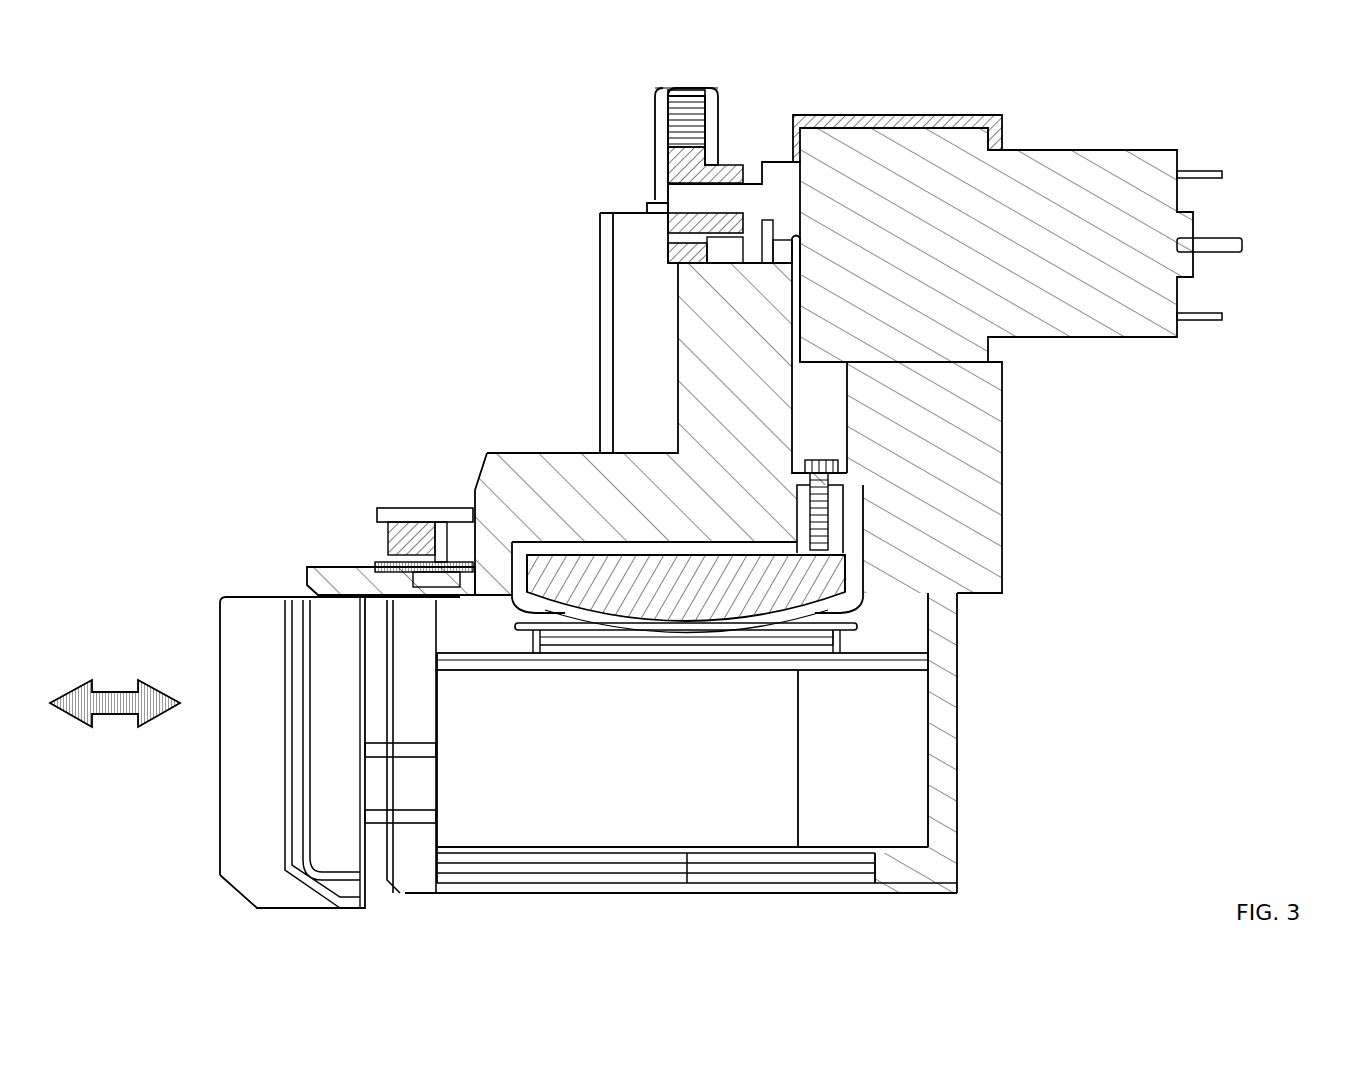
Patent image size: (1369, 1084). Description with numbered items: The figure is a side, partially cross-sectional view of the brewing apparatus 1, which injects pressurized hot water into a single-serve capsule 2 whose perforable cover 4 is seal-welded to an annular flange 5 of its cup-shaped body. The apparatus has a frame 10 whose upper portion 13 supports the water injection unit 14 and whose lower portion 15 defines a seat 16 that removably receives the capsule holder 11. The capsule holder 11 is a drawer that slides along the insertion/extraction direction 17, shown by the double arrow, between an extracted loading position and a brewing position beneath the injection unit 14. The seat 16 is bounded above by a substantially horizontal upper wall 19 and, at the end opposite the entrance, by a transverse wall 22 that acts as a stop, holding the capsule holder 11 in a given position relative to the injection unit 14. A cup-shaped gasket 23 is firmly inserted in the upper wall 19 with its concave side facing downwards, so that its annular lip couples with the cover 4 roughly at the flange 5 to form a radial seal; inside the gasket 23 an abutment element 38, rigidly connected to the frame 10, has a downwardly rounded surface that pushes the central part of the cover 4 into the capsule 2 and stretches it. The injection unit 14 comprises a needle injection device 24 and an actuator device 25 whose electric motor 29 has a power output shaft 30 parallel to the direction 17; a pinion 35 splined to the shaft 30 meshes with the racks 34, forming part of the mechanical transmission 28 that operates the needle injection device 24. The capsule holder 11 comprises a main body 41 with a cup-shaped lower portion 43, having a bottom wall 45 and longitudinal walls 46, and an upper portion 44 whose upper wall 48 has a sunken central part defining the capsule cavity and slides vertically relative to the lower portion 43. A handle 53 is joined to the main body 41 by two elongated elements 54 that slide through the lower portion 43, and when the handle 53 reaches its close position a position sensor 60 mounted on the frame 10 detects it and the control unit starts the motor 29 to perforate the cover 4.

The brewing apparatus 1 is at (325, 269).
The capsule 2 is at (834, 651).
The cover 4 is at (835, 628).
The annular flange 5 is at (860, 632).
The frame 10 is at (1012, 505).
The capsule holder 11 is at (216, 777).
The upper portion 13 is at (992, 427).
The water injection unit 14 is at (753, 104).
The lower portion 15 is at (964, 828).
The seat 16 is at (916, 804).
The insertion/extraction direction 17 is at (108, 688).
The upper wall 19 is at (358, 573).
The transverse wall 22 is at (946, 785).
The cup-shaped gasket 23 is at (848, 574).
The needle injection device 24 is at (647, 184).
The actuator device 25 is at (1037, 107).
The transmission 28 is at (733, 146).
The electric motor 29 is at (1143, 178).
The power output shaft 30 is at (692, 208).
The racks 34 is at (690, 90).
The pinion 35 is at (665, 150).
The abutment element 38 is at (585, 575).
The main body 41 is at (600, 886).
The lower portion 43 is at (521, 840).
The upper portion 44 is at (492, 647).
The bottom wall 45 is at (793, 871).
The longitudinal walls 46 is at (728, 823).
The upper wall 48 is at (525, 663).
The handle 53 is at (238, 827).
The elongated elements 54 is at (388, 797).
The position sensor 60 is at (389, 549).